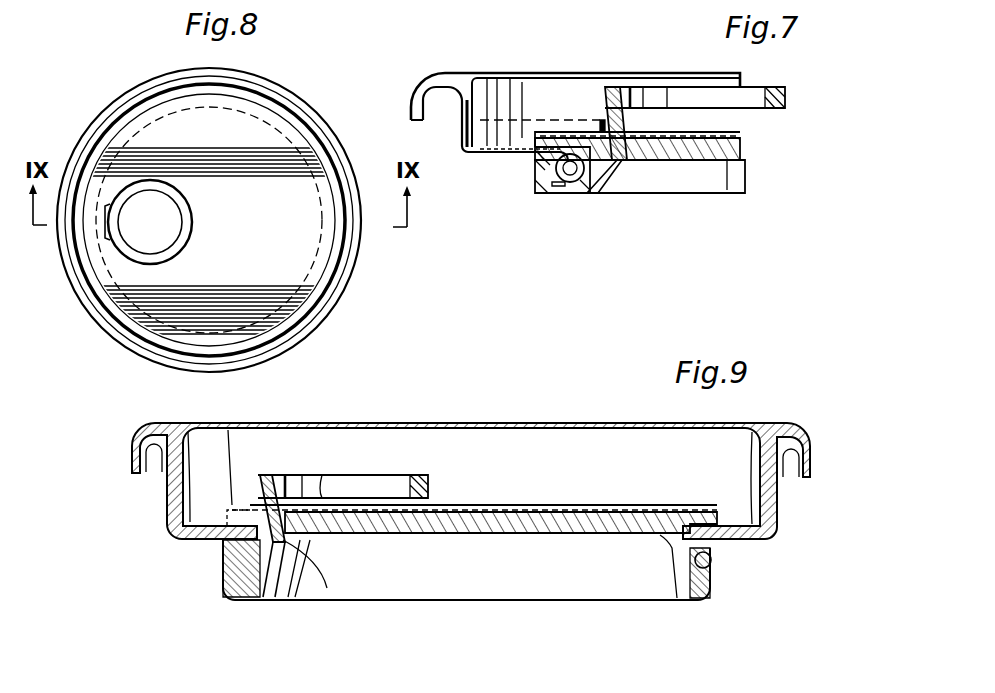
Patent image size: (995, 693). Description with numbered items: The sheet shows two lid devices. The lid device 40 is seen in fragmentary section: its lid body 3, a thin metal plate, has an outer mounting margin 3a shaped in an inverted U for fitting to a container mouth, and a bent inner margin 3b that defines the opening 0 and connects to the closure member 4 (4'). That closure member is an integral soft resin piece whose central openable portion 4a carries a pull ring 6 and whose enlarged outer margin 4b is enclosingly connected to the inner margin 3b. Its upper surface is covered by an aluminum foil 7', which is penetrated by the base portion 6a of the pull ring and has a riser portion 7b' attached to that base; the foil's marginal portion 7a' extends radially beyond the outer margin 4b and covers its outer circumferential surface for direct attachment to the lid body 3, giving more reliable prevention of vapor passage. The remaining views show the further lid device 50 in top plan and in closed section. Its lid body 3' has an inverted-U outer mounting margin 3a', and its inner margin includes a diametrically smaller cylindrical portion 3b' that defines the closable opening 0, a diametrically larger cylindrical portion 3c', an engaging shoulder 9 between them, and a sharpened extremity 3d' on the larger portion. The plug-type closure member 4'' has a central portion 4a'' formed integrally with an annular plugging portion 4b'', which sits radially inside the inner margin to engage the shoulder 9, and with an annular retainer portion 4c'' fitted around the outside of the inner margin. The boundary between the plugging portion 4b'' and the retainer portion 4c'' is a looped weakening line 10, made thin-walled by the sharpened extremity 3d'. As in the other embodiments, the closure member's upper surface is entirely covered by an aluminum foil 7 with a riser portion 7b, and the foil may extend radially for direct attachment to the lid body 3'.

In FIG. 8, the lid device 50 is at (139, 79).
In FIG. 9, the lid device 50 is at (570, 418).
In FIG. 7, the lid device 40 is at (545, 66).
In FIG. 7, the lid body 3 is at (575, 148).
In FIG. 9, the lid body 3' is at (442, 481).
In FIG. 8, the outer mounting margin 3a is at (201, 211).
In FIG. 7, the outer mounting margin 3a is at (432, 42).
In FIG. 9, the outer mounting margin 3a' is at (99, 451).
In FIG. 7, the inner margin 3b is at (556, 214).
In FIG. 9, the smaller cylindrical portion 3b' is at (331, 596).
In FIG. 9, the larger cylindrical portion 3c' is at (195, 618).
In FIG. 9, the sharpened extremity 3d' is at (213, 639).
In FIG. 7, the closure member 4 is at (637, 189).
In FIG. 8, the closure member 4' is at (210, 196).
In FIG. 9, the closure member 4'' is at (474, 581).
In FIG. 7, the central openable portion 4a is at (658, 220).
In FIG. 9, the central portion 4a'' is at (466, 596).
In FIG. 7, the enlarged outer margin 4b is at (534, 217).
In FIG. 9, the plugging portion 4b'' is at (315, 608).
In FIG. 9, the retainer portion 4c'' is at (201, 568).
In FIG. 8, the pull ring 6 is at (118, 264).
In FIG. 7, the pull ring 6 is at (786, 100).
In FIG. 9, the pull ring 6 is at (388, 483).
In FIG. 9, the base portion 6a is at (307, 492).
In FIG. 8, the aluminum foil 7 is at (228, 220).
In FIG. 9, the aluminum foil 7 is at (625, 445).
In FIG. 7, the aluminum foil 7' is at (689, 159).
In FIG. 7, the marginal portion 7a' is at (501, 83).
In FIG. 9, the riser portion 7b is at (236, 465).
In FIG. 7, the riser portion 7b' is at (553, 92).
In FIG. 9, the engaging shoulder 9 is at (263, 600).
In FIG. 9, the weakening line 10 is at (253, 600).
In FIG. 8, the opening 0 is at (320, 280).
In FIG. 7, the opening 0 is at (578, 196).
In FIG. 9, the opening 0 is at (720, 570).